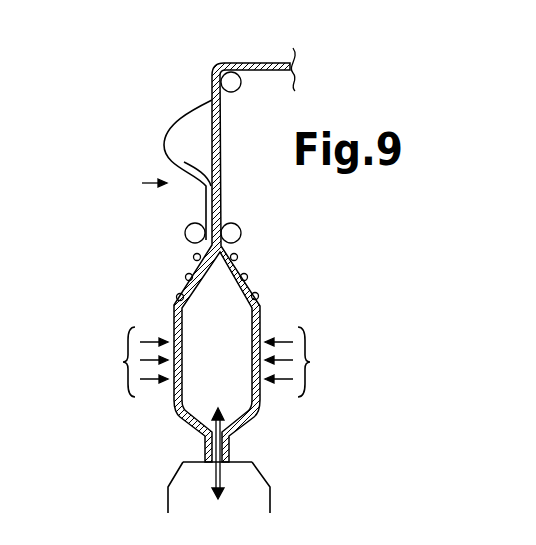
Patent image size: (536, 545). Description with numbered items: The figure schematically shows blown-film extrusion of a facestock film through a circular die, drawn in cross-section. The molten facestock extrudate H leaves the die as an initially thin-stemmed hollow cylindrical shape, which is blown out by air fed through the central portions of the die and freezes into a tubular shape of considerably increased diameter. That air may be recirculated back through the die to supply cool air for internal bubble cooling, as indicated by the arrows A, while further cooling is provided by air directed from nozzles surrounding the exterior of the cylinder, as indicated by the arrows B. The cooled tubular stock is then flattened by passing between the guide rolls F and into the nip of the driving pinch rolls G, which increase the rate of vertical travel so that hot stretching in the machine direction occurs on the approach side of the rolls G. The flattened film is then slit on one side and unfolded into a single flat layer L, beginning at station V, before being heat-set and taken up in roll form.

The single flat layer L is at (212, 98).
The station V is at (141, 183).
The driving pinch rolls G is at (186, 228).
The guide rolls F is at (165, 296).
The arrows B is at (215, 362).
The arrows A is at (217, 467).
The molten facestock extrudate H is at (231, 452).